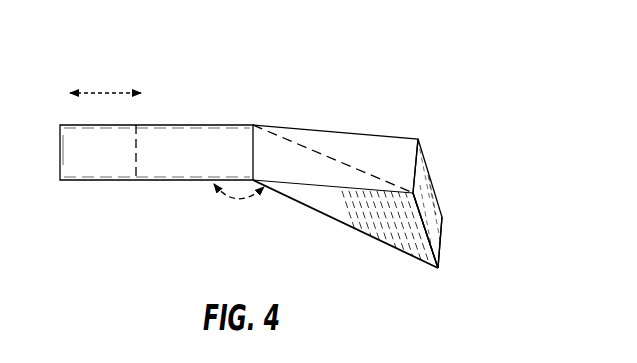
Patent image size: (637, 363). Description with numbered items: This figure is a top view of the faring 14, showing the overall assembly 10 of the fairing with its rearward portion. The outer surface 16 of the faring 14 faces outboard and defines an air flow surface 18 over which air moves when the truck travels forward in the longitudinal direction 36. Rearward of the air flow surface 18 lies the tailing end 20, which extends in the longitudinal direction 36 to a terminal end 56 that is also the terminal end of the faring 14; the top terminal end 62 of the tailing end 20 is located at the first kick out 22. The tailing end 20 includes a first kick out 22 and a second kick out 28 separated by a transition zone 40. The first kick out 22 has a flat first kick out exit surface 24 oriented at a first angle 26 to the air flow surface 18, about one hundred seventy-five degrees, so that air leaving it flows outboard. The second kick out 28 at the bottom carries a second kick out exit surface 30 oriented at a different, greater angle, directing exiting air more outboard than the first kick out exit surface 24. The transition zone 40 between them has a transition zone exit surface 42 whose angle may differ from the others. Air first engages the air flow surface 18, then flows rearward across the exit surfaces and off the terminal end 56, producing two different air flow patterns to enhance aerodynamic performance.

The tool assembly 10 is at (457, 56).
The faring 14 is at (207, 64).
The outer surface 16 is at (156, 185).
The air flow surface 18 is at (188, 183).
The tailing end 20 is at (333, 137).
The first kick out 22 is at (340, 139).
The first kick out exit surface 24 is at (313, 188).
The first angle 26 is at (241, 204).
The second kick out 28 is at (420, 262).
The second kick out exit surface 30 is at (360, 234).
The longitudinal direction 36 is at (107, 91).
The transition zone 40 is at (437, 203).
The transition zone exit surface 42 is at (345, 209).
The terminal end 56 is at (435, 233).
The top terminal end 62 is at (303, 138).